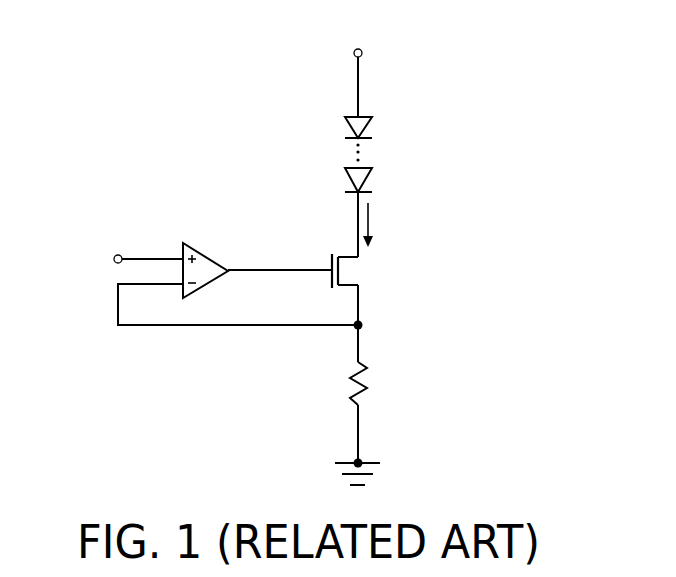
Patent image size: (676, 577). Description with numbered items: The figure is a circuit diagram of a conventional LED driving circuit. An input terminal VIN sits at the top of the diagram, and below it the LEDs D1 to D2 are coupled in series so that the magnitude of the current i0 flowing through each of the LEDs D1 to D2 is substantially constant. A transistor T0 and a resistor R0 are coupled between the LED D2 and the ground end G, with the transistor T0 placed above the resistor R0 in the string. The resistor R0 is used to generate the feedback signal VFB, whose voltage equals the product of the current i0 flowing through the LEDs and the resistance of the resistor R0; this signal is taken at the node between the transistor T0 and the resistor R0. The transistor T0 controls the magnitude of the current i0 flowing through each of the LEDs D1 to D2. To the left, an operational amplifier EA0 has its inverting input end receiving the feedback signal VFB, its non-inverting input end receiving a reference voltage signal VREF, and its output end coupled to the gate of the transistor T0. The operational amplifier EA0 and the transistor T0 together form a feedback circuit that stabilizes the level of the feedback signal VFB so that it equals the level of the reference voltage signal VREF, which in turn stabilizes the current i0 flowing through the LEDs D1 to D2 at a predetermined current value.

The input voltage terminal VIN is at (356, 63).
The LED D1 is at (381, 128).
The LED D2 is at (381, 211).
The current i0 is at (379, 225).
The transistor T0 is at (366, 289).
The operational amplifier EA0 is at (257, 264).
The reference voltage signal VREF is at (113, 261).
The feedback signal VFB is at (240, 322).
The resistor R0 is at (376, 394).
The ground end G is at (362, 457).